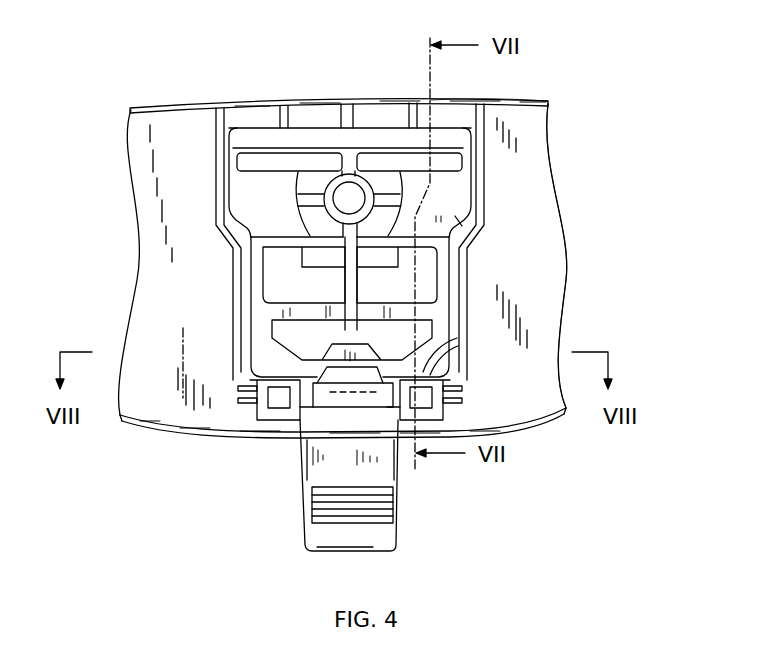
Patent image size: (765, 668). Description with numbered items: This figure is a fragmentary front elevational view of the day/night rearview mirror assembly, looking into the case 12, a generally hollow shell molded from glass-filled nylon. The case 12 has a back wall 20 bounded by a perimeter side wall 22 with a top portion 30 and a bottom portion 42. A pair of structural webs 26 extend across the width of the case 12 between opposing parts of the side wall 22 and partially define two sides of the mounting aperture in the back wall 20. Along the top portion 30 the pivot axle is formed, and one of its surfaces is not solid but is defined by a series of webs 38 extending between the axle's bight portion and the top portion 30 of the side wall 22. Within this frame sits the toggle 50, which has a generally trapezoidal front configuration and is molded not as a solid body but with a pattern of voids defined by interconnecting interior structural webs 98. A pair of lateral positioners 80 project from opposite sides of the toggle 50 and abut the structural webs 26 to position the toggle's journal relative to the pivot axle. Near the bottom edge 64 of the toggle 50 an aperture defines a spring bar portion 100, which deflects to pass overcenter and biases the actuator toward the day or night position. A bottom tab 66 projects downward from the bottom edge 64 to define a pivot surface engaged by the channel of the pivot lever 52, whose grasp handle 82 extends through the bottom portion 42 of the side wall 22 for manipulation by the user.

The case 12 is at (550, 187).
The back wall 20 is at (562, 282).
The perimeter side wall 22 is at (253, 101).
The structural webs 26 is at (226, 196).
The top portion of side wall 30 is at (470, 100).
The webs 38 is at (410, 122).
The bottom portion of side wall 42 is at (143, 429).
The toggle 50 is at (460, 221).
The pivot lever 52 is at (294, 470).
The bottom edge 64 is at (427, 362).
The bottom tab 66 is at (344, 350).
The lateral positioners 80 is at (224, 178).
The grasp handle 82 is at (397, 460).
The interior structural webs 98 is at (347, 289).
The spring bar portion 100 is at (244, 380).